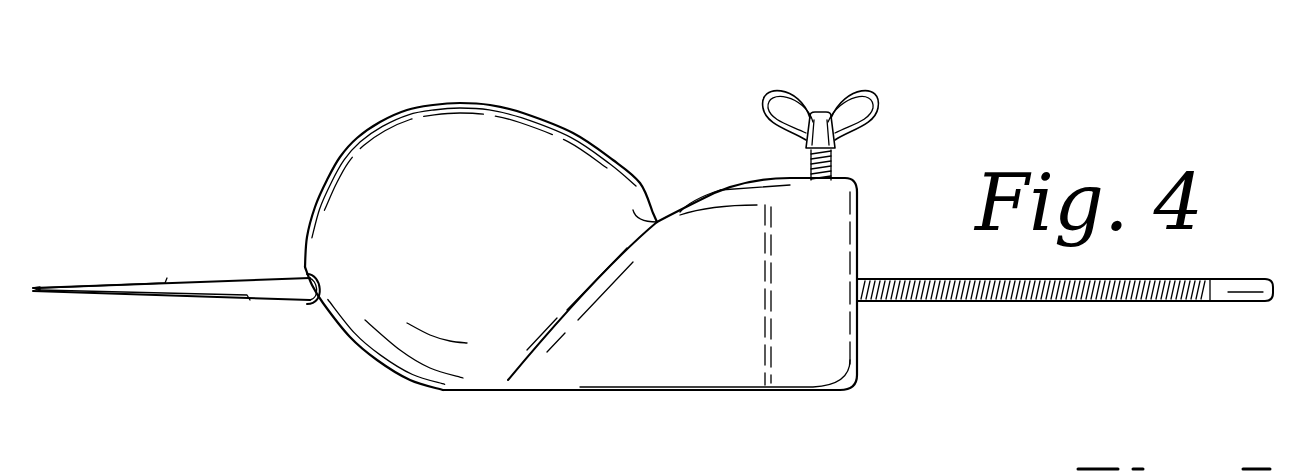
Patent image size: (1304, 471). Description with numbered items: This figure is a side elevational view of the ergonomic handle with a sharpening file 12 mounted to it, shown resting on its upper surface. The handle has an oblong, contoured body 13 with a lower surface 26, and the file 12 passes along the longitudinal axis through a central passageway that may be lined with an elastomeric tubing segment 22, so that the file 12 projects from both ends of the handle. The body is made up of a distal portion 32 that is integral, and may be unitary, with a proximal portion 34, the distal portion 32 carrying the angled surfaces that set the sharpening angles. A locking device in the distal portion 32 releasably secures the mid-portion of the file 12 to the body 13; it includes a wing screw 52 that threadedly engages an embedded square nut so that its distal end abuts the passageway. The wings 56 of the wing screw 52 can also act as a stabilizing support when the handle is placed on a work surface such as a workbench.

The file 12 is at (257, 285).
The oblong contoured body 13 is at (627, 137).
The tubing segment 22 is at (558, 393).
The lower surface 26 is at (502, 103).
The distal portion 32 is at (709, 340).
The proximal portion 34 is at (488, 247).
The wing screw 52 is at (833, 163).
The wings 56 is at (857, 102).